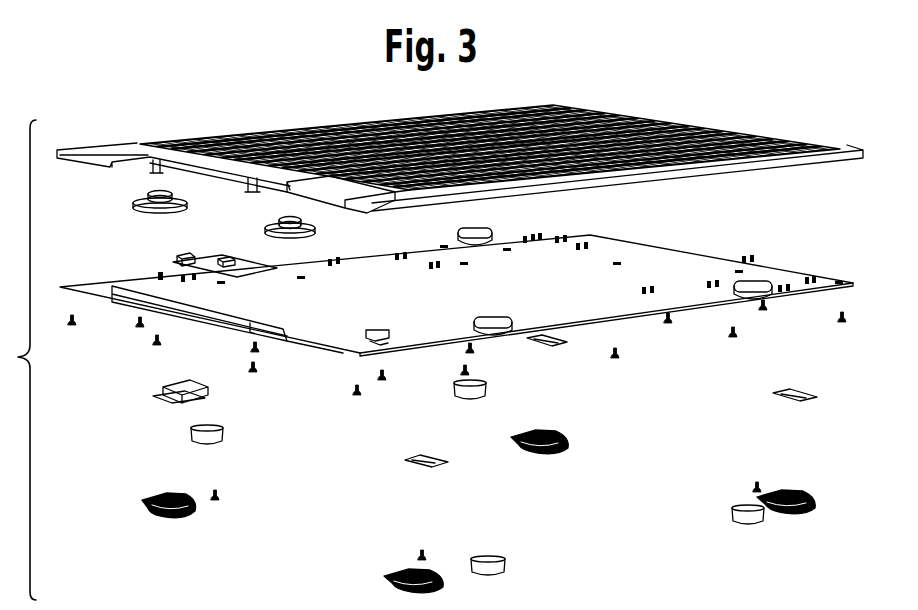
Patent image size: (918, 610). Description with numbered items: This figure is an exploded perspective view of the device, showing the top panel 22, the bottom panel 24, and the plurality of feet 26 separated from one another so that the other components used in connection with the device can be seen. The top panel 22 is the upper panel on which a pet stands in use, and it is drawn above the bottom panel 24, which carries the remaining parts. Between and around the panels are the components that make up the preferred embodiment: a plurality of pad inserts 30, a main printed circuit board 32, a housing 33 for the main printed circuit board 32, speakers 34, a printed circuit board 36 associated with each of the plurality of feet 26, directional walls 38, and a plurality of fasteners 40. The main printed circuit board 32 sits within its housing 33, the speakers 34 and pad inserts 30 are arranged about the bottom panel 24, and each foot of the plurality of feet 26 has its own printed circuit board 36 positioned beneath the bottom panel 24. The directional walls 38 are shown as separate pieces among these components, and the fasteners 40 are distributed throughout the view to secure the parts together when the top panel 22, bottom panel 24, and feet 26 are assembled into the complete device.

The top panel 22 is at (651, 118).
The bottom panel 24 is at (673, 260).
The feet 26 is at (395, 583).
The pad inserts 30 is at (483, 228).
The main printed circuit board 32 is at (152, 246).
The housing 33 is at (134, 176).
The speakers 34 is at (265, 233).
The printed circuit board 36 is at (158, 400).
The directional walls 38 is at (367, 342).
The fasteners 40 is at (157, 350).